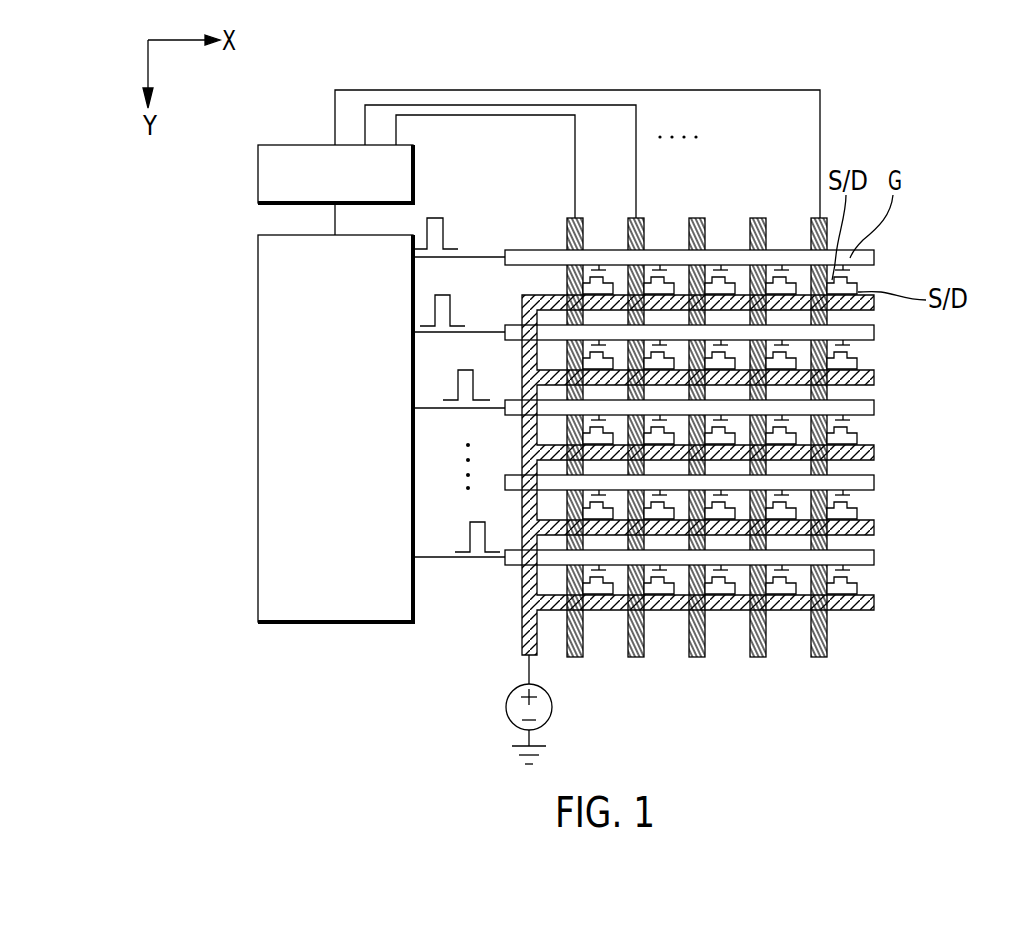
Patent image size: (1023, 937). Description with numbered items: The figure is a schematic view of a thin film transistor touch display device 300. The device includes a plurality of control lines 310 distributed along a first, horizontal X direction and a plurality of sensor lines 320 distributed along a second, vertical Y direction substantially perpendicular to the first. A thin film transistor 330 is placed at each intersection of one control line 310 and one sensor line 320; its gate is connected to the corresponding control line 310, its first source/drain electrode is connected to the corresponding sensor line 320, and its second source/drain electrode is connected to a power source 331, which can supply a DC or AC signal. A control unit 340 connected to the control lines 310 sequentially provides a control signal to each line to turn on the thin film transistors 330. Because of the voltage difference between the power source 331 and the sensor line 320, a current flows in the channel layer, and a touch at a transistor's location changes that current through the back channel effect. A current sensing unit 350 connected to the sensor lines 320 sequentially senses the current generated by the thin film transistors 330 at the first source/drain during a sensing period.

The thin film transistor touch display device 300 is at (1016, 63).
The control line 310 is at (875, 257).
The sensor line 320 is at (812, 218).
The thin film transistor 330 is at (850, 277).
The power source 331 is at (505, 714).
The control unit 340 is at (258, 433).
The current sensing unit 350 is at (258, 178).